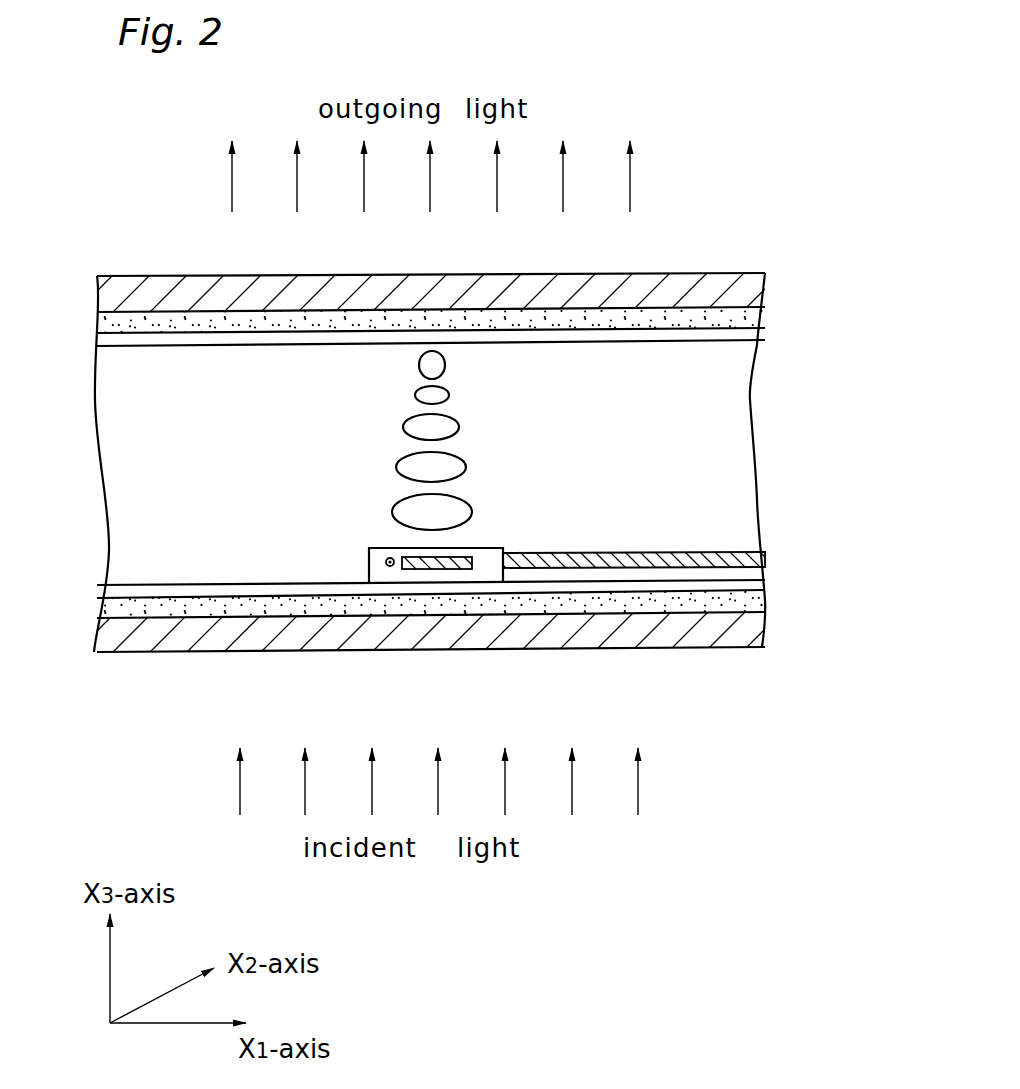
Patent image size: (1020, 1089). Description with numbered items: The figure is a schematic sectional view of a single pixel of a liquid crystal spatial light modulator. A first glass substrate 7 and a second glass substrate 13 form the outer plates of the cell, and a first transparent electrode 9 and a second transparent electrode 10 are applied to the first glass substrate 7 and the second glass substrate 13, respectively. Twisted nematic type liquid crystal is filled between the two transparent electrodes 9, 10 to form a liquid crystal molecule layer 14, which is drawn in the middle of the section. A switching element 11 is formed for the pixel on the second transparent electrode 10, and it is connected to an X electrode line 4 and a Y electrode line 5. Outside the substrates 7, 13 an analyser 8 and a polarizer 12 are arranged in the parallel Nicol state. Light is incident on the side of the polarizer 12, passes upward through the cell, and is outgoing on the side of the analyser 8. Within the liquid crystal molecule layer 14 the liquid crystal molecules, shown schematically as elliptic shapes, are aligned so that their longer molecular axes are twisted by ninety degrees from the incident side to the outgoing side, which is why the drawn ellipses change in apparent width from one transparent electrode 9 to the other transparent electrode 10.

The X electrode line 4 is at (697, 557).
The Y electrode line 5 is at (421, 569).
The first glass substrate 7 is at (151, 321).
The analyser 8 is at (705, 288).
The first transparent electrode 9 is at (745, 333).
The second transparent electrode 10 is at (757, 583).
The switching element 11 is at (386, 567).
The polarizer 12 is at (668, 632).
The second glass substrate 13 is at (763, 600).
The liquid crystal molecule layer 14 is at (737, 428).